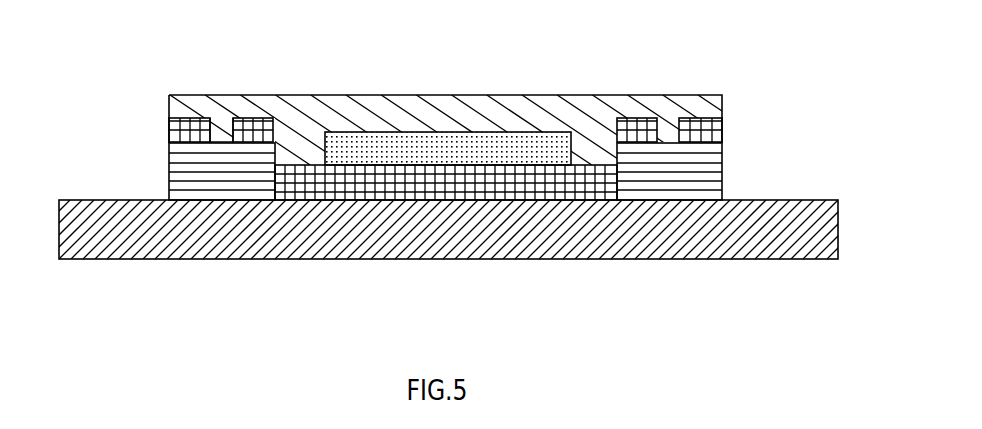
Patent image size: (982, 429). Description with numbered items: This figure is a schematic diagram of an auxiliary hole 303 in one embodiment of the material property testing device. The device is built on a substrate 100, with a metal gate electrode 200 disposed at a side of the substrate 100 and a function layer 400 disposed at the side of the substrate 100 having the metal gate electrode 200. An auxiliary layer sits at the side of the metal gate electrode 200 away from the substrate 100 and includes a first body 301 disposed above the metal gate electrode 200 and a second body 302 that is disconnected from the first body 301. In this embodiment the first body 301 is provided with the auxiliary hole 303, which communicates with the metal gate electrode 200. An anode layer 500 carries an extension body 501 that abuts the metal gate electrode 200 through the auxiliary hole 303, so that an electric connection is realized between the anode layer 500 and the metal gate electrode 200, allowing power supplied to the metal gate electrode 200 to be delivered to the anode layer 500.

The substrate 100 is at (226, 228).
The metal gate electrode 200 is at (182, 169).
The first body 301 is at (177, 128).
The second body 302 is at (566, 177).
The auxiliary hole 303 is at (213, 128).
The function layer 400 is at (483, 148).
The anode layer 500 is at (440, 117).
The extension body 501 is at (232, 125).